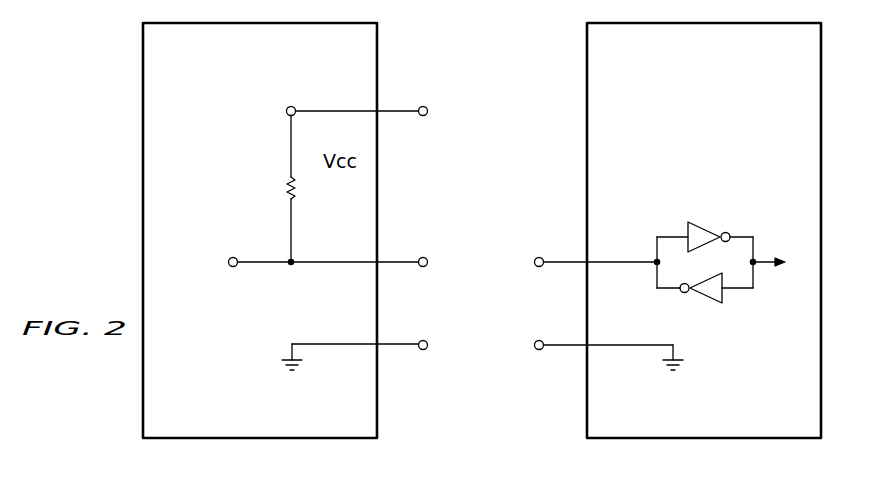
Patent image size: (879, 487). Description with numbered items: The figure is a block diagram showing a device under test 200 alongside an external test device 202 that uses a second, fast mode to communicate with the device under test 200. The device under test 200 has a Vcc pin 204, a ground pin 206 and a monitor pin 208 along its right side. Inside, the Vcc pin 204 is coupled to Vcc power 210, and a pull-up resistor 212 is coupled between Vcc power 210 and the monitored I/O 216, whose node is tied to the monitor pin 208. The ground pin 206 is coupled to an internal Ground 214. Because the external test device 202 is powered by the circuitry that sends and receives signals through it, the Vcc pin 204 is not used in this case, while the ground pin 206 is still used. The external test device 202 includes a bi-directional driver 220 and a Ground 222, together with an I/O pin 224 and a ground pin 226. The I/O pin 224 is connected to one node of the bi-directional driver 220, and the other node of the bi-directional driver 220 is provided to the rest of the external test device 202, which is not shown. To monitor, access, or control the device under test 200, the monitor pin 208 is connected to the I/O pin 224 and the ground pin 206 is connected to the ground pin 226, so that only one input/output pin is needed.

The device under test 200 is at (138, 157).
The external test device 202 is at (581, 160).
The Vcc pin 204 is at (426, 106).
The ground pin 206 is at (425, 350).
The monitor pin 208 is at (426, 257).
The Vcc power 210 is at (295, 115).
The pull-up resistor 212 is at (286, 185).
The ground 214 is at (281, 371).
The monitored I/O 216 is at (233, 267).
The bi-directional driver 220 is at (715, 206).
The ground 222 is at (683, 370).
The I/O pin 224 is at (537, 257).
The ground pin 226 is at (537, 350).